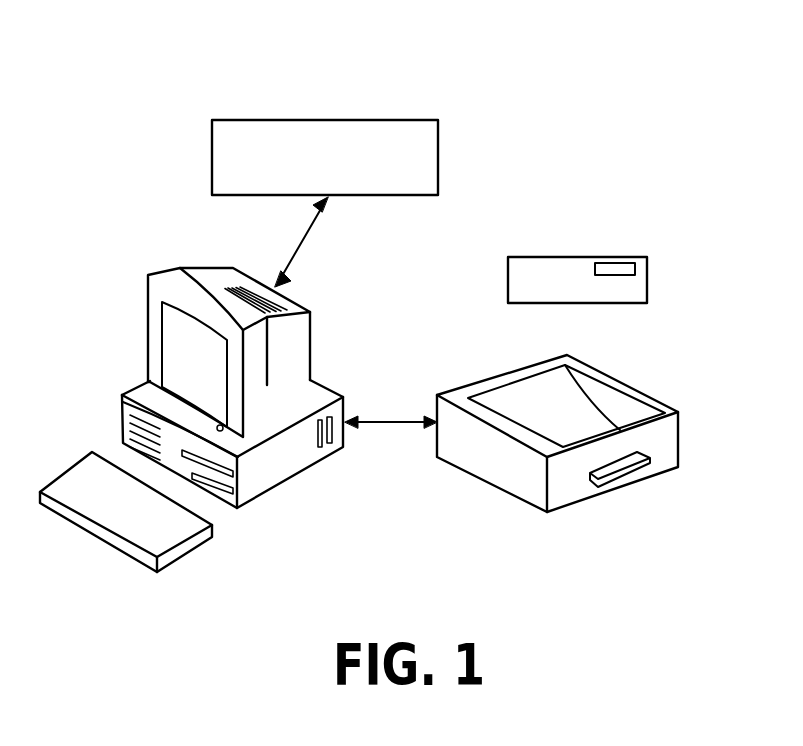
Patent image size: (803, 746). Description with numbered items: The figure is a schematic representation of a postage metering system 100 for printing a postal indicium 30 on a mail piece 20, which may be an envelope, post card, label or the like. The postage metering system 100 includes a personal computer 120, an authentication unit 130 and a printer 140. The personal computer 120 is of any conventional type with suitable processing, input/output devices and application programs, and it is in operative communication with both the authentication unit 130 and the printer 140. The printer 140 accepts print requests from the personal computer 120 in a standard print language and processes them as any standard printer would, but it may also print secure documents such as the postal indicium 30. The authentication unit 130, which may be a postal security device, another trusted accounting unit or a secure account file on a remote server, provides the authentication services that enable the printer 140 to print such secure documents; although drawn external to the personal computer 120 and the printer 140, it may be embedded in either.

The postage metering system 100 is at (524, 120).
The personal computer 120 is at (163, 272).
The authentication unit 130 is at (325, 120).
The mail piece 20 is at (533, 257).
The postal indicium 30 is at (612, 263).
The printer 140 is at (601, 365).